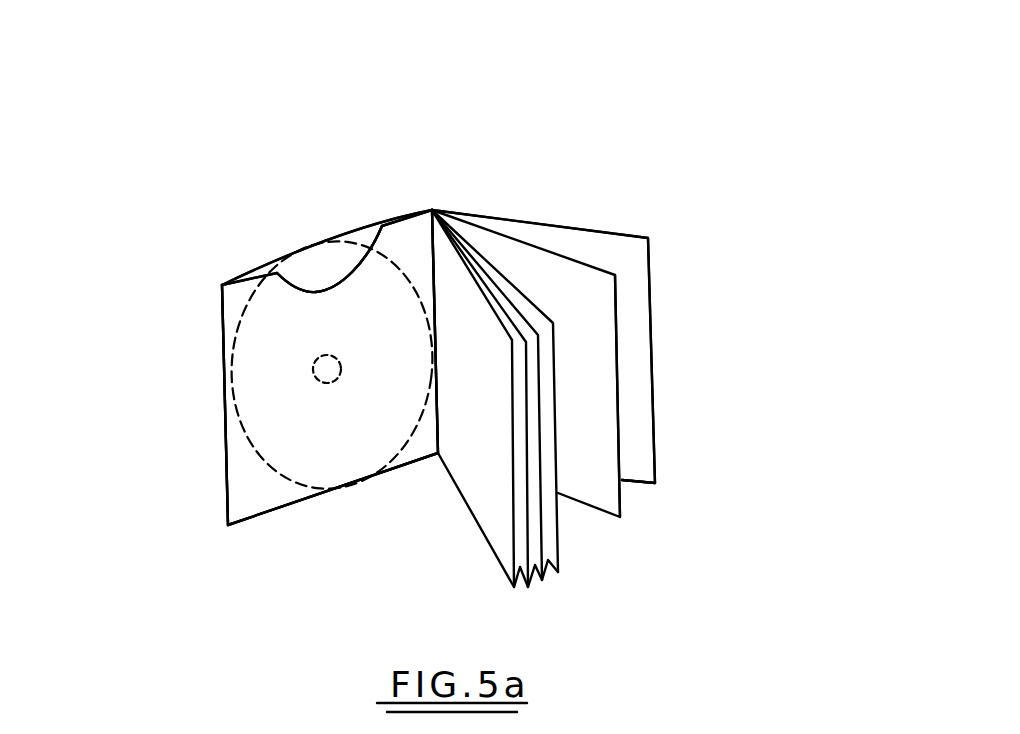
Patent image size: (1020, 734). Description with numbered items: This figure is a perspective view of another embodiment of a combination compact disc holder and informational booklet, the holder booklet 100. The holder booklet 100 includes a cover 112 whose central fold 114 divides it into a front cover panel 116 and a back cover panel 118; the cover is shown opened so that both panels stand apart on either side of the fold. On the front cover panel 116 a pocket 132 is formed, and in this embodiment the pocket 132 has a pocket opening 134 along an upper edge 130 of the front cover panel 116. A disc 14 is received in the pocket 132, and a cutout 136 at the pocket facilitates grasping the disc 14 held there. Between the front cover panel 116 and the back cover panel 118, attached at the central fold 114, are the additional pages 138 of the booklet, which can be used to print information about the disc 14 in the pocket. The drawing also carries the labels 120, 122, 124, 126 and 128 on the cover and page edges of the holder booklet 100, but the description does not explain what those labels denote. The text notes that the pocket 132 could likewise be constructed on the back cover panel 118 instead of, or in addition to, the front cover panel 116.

The holder booklet 100 is at (797, 70).
The cover 112 is at (664, 370).
The central fold 114 is at (434, 211).
The front cover panel 116 is at (258, 271).
The back cover panel 118 is at (643, 462).
The front cover bottom edge 120 is at (326, 502).
The front cover side edge 122 is at (224, 423).
The inner page edge 124 is at (618, 294).
The front cover 126 is at (222, 303).
The inner page 128 is at (572, 281).
The upper edge 130 is at (302, 243).
The disc 14 is at (323, 262).
The pocket opening 134 is at (361, 228).
The pocket 132 is at (382, 227).
The cutout 136 is at (326, 281).
The additional pages 138 is at (500, 606).